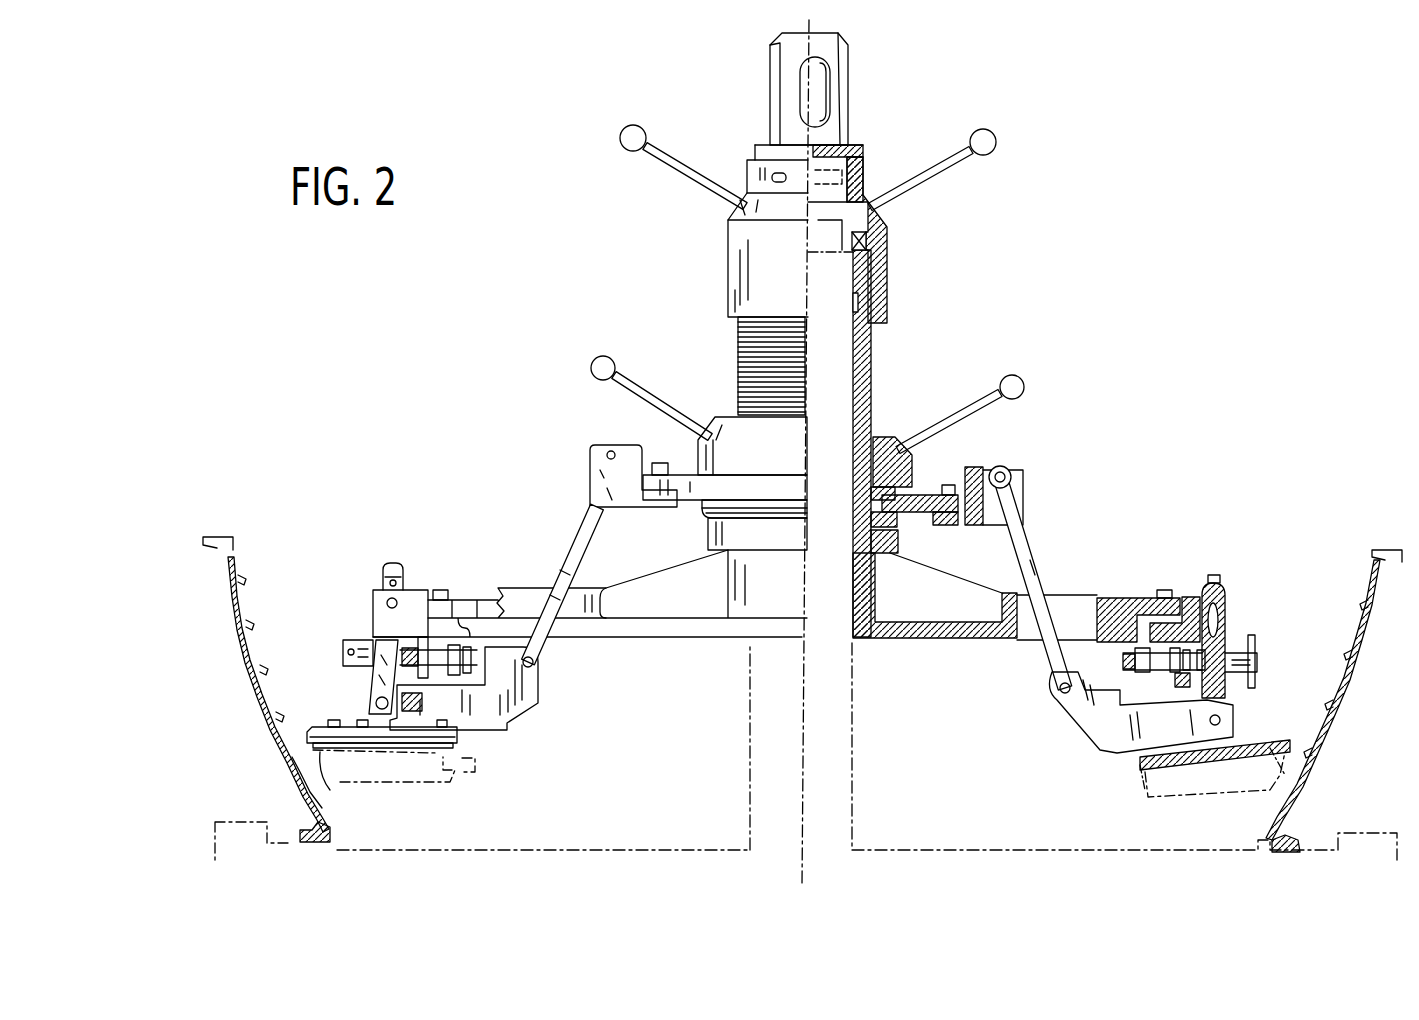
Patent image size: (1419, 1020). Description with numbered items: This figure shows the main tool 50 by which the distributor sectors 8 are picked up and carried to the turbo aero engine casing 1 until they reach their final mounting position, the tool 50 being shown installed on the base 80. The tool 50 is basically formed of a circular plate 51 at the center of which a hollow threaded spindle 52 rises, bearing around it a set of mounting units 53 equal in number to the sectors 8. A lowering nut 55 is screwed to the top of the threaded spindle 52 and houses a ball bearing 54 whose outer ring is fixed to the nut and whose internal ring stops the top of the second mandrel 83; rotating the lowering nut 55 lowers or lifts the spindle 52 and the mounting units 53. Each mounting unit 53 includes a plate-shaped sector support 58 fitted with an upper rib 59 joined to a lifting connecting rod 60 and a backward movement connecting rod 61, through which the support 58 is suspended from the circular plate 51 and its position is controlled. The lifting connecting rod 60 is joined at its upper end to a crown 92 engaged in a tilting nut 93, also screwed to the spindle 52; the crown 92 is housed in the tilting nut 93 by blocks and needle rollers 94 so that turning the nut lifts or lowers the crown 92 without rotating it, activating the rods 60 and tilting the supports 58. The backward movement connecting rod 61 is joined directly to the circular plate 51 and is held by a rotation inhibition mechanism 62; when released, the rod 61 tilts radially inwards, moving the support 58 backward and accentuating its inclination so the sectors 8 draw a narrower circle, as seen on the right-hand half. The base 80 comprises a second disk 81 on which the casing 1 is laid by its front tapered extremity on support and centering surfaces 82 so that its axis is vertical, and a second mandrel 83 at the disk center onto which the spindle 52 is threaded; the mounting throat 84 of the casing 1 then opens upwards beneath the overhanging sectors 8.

The casing 1 is at (215, 619).
The sector 8 is at (1150, 818).
The main tool 50 is at (705, 243).
The circular plate 51 is at (627, 650).
The threaded spindle 52 is at (730, 364).
The mounting unit 53 is at (1150, 578).
The ball bearing 54 is at (868, 241).
The lowering nut 55 is at (870, 160).
The sector support 58 is at (1140, 765).
The upper rib 59 is at (1120, 725).
The lifting connecting rod 60 is at (575, 548).
The backward movement connecting rod 61 is at (1228, 636).
The rotation inhibition mechanism 62 is at (1305, 680).
The base 80 is at (560, 838).
The second disk 81 is at (290, 840).
The support and centering surfaces 82 is at (325, 825).
The second mandrel 83 is at (740, 760).
The mounting throat 84 is at (295, 775).
The crown 92 is at (750, 490).
The tilting nut 93 is at (698, 455).
The blocks and needle rollers 94 is at (858, 520).